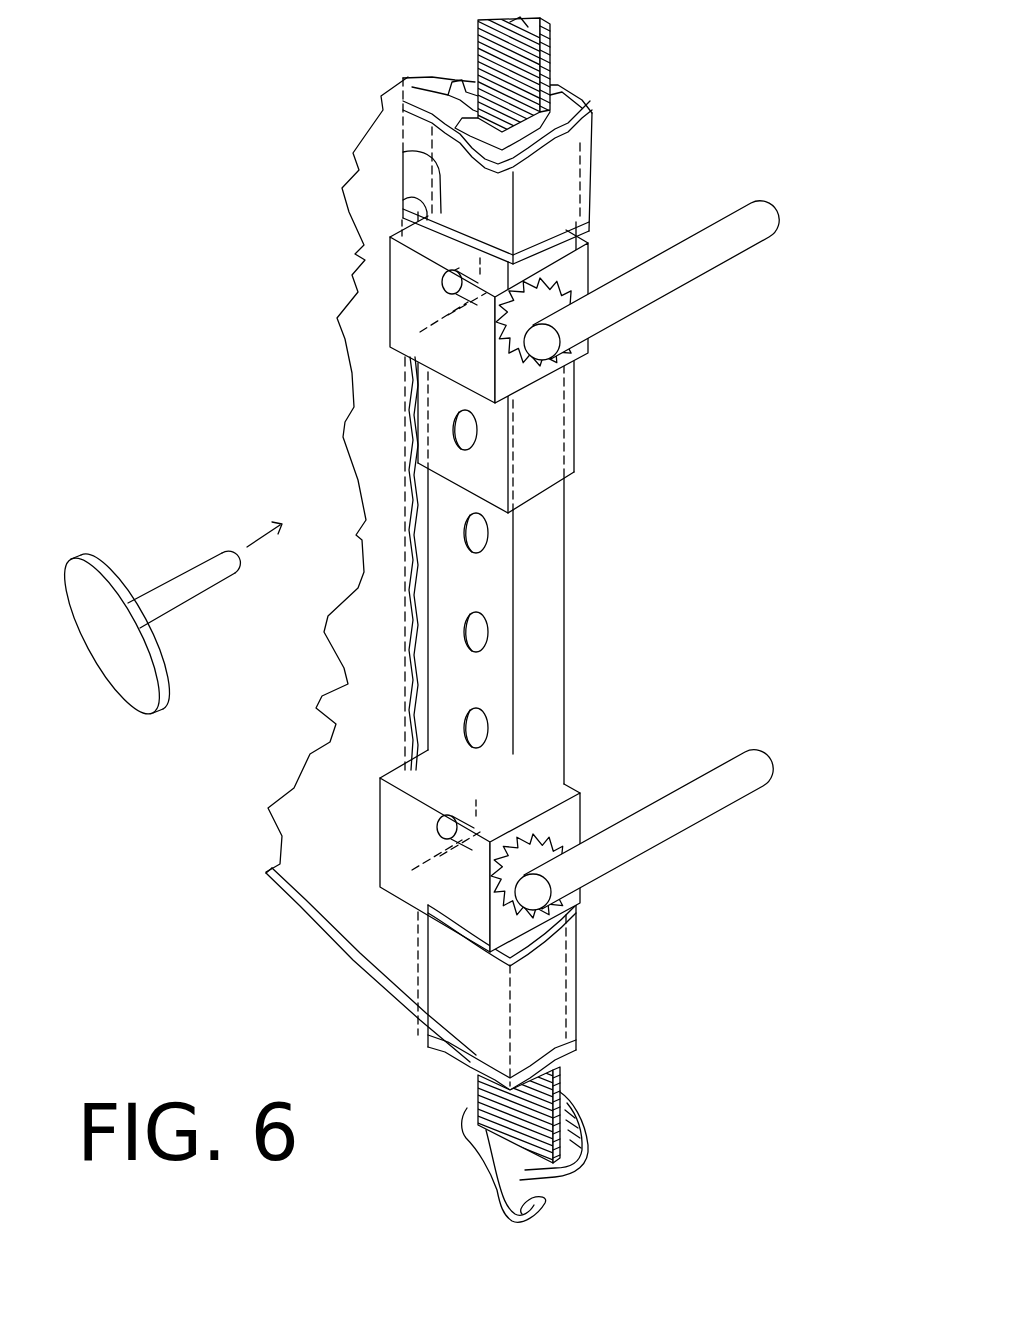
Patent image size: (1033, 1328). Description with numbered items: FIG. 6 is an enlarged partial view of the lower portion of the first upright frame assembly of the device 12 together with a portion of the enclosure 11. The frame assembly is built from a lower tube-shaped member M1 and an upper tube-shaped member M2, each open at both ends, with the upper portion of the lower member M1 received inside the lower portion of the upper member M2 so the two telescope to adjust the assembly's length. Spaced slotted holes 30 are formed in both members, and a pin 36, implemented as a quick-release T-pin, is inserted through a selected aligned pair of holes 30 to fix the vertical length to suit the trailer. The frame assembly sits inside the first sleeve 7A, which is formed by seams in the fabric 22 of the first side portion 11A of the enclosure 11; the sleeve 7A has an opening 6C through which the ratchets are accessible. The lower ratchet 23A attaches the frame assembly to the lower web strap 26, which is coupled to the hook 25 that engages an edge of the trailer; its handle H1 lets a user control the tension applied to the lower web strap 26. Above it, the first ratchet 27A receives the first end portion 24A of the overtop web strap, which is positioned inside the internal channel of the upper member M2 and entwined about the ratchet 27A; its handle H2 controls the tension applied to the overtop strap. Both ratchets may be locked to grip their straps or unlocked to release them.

The device 12 is at (457, 80).
The first end portion of the overtop web strap 24A is at (550, 38).
The upper tube-shaped member M2 is at (570, 93).
The first sleeve 7A is at (590, 170).
The opening 6C is at (428, 151).
The first ratchet 27A is at (390, 295).
The fabric 22 is at (368, 367).
The first side portion 11A is at (343, 427).
The handle H2 is at (660, 297).
The slotted holes 30 is at (488, 538).
The lower tube-shaped member M1 is at (565, 620).
The pin 36 is at (175, 710).
The handle H1 is at (632, 863).
The lower ratchet 23A is at (382, 868).
The enclosure 11 is at (350, 963).
The lower web strap 26 is at (566, 1105).
The hook 25 is at (580, 1192).